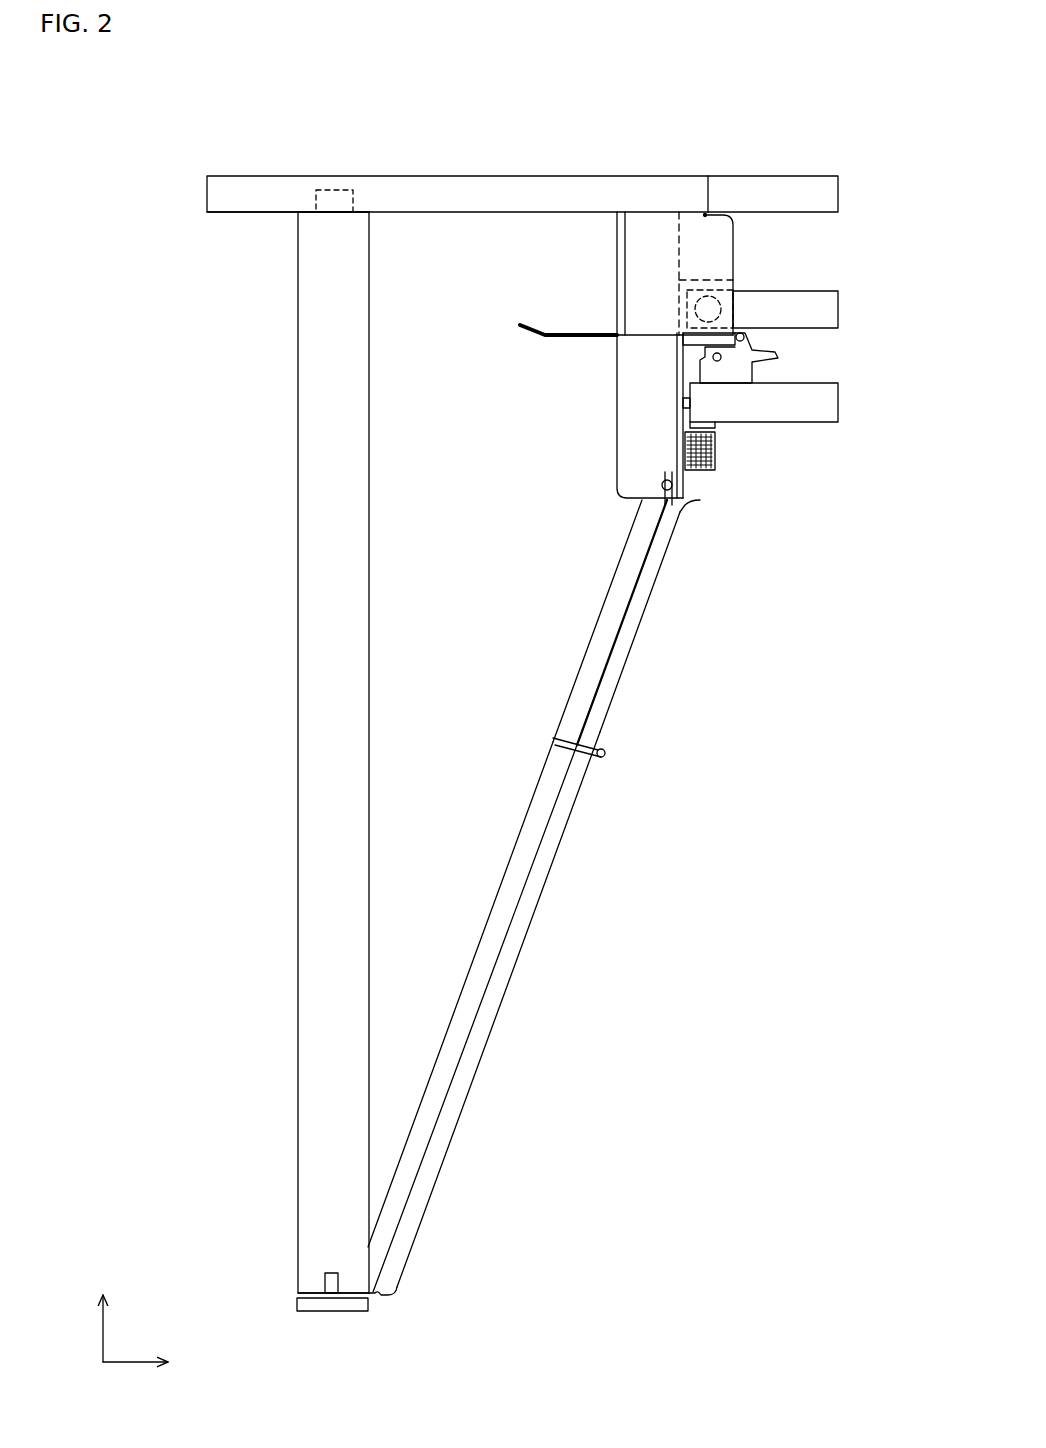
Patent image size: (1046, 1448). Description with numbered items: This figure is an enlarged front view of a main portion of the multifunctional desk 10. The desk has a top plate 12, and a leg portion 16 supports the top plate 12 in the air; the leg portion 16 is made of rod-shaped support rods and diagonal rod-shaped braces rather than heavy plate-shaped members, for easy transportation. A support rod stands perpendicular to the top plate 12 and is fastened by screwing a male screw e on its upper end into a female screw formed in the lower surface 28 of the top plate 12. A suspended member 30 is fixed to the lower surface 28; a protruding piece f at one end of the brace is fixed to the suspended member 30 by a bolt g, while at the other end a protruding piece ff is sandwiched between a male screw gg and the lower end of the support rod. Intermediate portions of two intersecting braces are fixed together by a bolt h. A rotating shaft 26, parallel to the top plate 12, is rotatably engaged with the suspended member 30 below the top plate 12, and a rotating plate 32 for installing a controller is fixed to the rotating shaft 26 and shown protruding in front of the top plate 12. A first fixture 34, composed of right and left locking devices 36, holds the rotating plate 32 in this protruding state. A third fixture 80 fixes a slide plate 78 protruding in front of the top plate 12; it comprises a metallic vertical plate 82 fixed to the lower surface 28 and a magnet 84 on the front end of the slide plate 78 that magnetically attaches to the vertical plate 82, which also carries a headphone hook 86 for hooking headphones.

The multifunctional desk 10 is at (177, 133).
The top plate 12 is at (466, 172).
The leg portion 16 is at (260, 729).
The rotating shaft 26 is at (683, 403).
The lower surface 28 is at (258, 213).
The suspended member 30 is at (615, 363).
The rotating plate 32 is at (820, 425).
The first fixture 34 is at (792, 317).
The locking device 36 is at (783, 348).
The slide plate 78 is at (677, 315).
The third fixture 80 is at (653, 231).
The vertical plate 82 is at (637, 282).
The magnet 84 is at (708, 296).
The headphone hook 86 is at (530, 322).
The male screw e is at (335, 192).
The protruding piece f is at (668, 472).
The bolt g is at (660, 486).
The bolt h is at (605, 755).
The male screw gg is at (315, 1305).
The protruding piece ff is at (355, 1300).